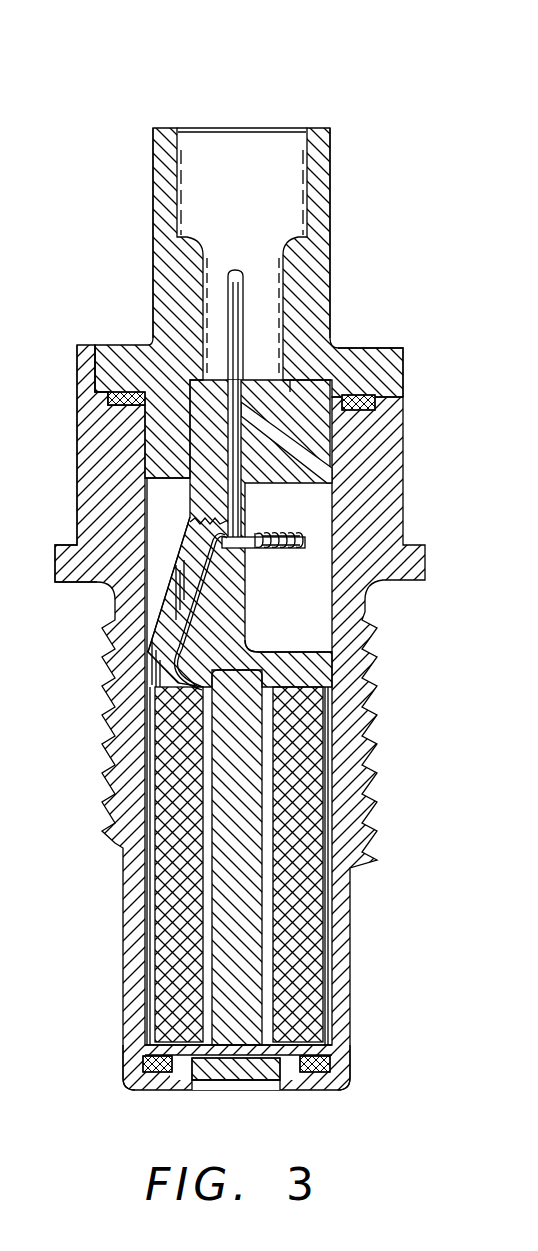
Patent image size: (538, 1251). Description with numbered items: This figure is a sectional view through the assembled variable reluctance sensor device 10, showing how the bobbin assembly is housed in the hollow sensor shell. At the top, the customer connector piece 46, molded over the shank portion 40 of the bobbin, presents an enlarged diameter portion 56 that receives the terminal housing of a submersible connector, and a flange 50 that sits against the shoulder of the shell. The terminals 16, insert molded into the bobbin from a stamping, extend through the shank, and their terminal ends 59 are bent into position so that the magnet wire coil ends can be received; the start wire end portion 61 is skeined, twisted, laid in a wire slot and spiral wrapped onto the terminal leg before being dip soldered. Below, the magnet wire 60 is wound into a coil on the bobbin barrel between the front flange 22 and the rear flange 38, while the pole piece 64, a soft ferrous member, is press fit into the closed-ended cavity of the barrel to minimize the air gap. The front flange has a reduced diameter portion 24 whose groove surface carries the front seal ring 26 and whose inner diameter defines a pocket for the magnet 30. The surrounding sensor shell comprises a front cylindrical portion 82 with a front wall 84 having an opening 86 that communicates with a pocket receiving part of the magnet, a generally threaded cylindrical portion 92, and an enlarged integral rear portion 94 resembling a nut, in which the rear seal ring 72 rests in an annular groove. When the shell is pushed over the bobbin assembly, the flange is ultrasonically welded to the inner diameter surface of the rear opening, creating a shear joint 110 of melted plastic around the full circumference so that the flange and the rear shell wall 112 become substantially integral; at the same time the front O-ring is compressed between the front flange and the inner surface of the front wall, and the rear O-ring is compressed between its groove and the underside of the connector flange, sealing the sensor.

The variable reluctance sensor device 10 is at (247, 578).
The terminals 16 is at (232, 314).
The front flange 22 is at (322, 1050).
The reduced diameter portion 24 is at (165, 1080).
The front seal ring 26 is at (350, 1072).
The magnet 30 is at (256, 1072).
The rear flange 38 is at (322, 670).
The shank portion 40 is at (188, 503).
The customer connector piece 46 is at (141, 159).
The flange 50 is at (352, 349).
The enlarged diameter portion 56 is at (326, 178).
The terminal ends 59 is at (305, 550).
The start wire end portion 61 is at (276, 535).
The magnet wire 60 is at (302, 877).
The pole piece 64 is at (245, 757).
The rear seal ring 72 is at (378, 402).
The front cylindrical portion 82 is at (132, 953).
The front wall 84 is at (183, 1082).
The opening 86 is at (238, 1085).
The threaded cylindrical portion 92 is at (116, 745).
The enlarged integral rear portion 94 is at (92, 437).
The shear joint 110 is at (96, 345).
The rear shell wall 112 is at (395, 349).